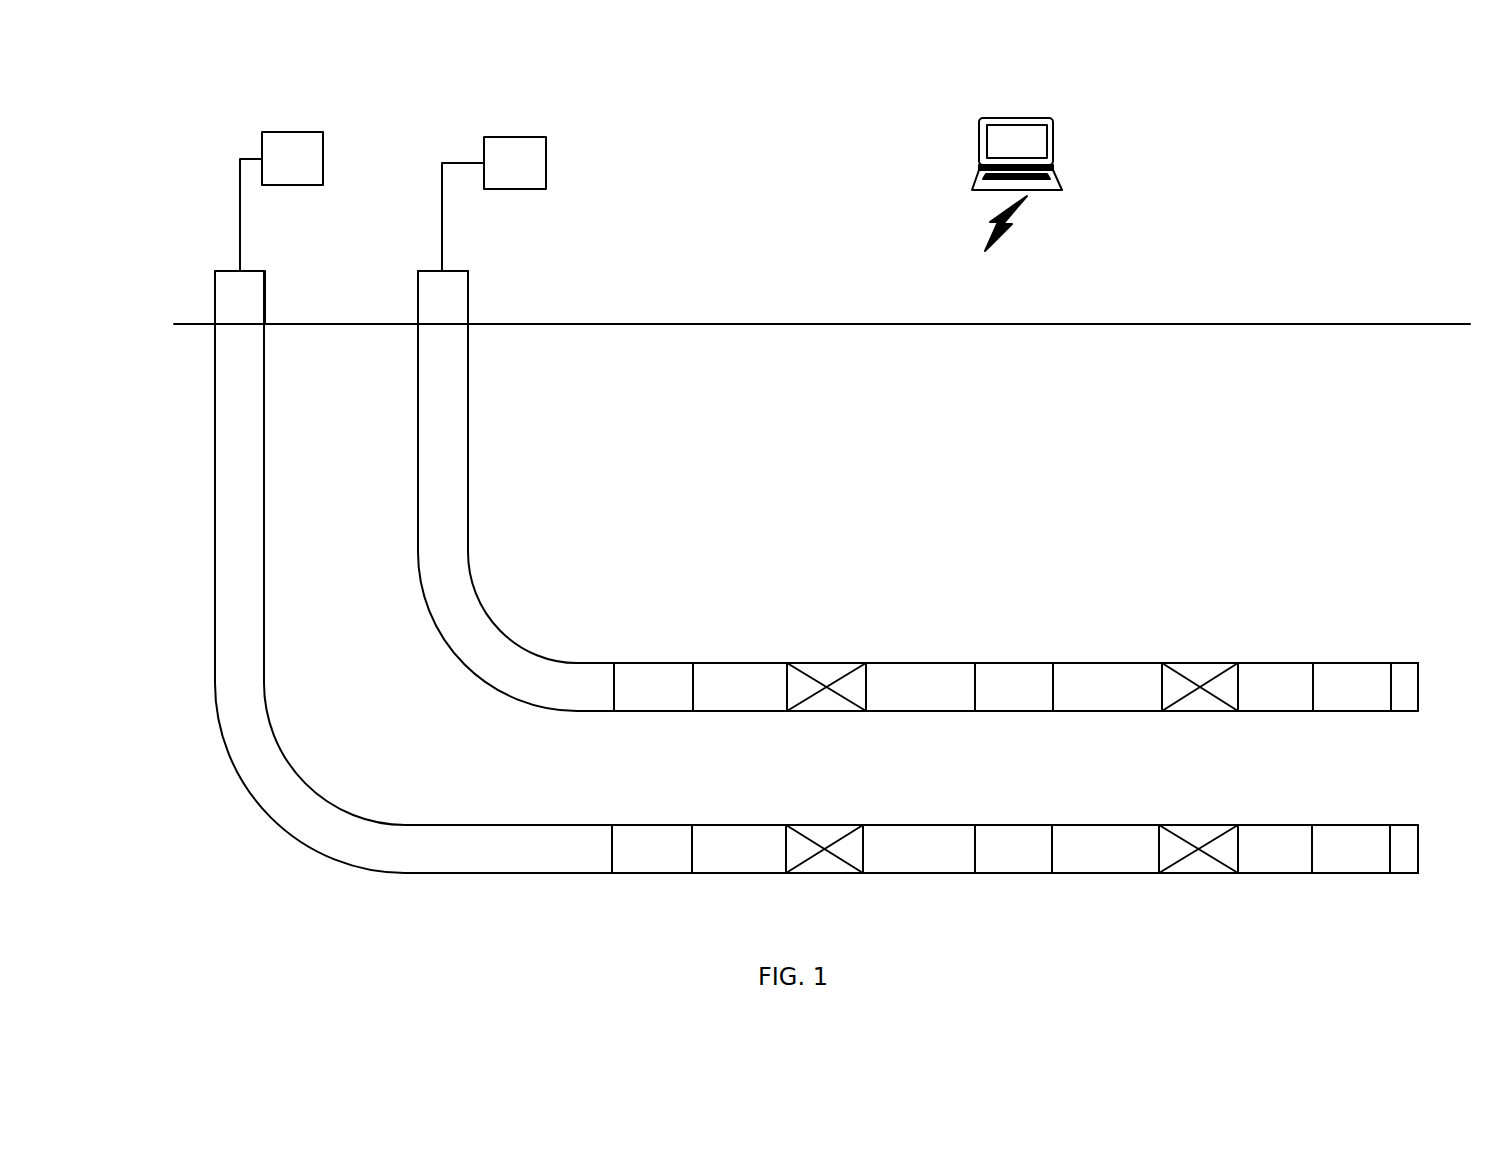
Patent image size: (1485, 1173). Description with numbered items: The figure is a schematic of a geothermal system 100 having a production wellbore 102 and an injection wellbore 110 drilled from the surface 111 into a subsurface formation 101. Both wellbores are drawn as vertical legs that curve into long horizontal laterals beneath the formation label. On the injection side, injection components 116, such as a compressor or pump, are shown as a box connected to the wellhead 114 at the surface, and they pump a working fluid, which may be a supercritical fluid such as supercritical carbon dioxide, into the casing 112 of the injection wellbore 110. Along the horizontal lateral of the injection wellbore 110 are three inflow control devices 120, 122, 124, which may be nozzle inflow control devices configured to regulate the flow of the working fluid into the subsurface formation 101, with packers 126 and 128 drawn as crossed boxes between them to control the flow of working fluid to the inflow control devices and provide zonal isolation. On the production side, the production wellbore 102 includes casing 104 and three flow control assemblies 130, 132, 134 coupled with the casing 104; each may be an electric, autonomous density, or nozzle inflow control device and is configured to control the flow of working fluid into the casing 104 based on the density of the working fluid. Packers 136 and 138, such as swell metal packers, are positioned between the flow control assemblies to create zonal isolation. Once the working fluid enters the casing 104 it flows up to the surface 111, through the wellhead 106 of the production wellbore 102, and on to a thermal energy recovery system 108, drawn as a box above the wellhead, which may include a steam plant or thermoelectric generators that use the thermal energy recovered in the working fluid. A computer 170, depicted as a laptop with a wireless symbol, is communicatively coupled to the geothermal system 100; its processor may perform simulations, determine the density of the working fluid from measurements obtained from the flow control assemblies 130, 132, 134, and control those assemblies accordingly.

The geothermal system 100 is at (156, 130).
The subsurface formation 101 is at (645, 426).
The production wellbore 102 is at (238, 383).
The casing 104 is at (215, 543).
The wellhead 106 is at (215, 295).
The thermal energy recovery system 108 is at (293, 132).
The injection wellbore 110 is at (438, 377).
The surface 111 is at (1376, 324).
The casing 112 is at (418, 505).
The wellhead 114 is at (417, 295).
The injection components 116 is at (513, 137).
The inflow control device 120 is at (672, 663).
The inflow control device 122 is at (1016, 663).
The inflow control device 124 is at (1350, 663).
The packer 126 is at (826, 663).
The packer 128 is at (1207, 663).
The flow control assembly 130 is at (651, 825).
The flow control assembly 132 is at (1016, 825).
The flow control assembly 134 is at (1350, 825).
The packer 136 is at (823, 825).
The packer 138 is at (1194, 825).
The computer 170 is at (1055, 148).